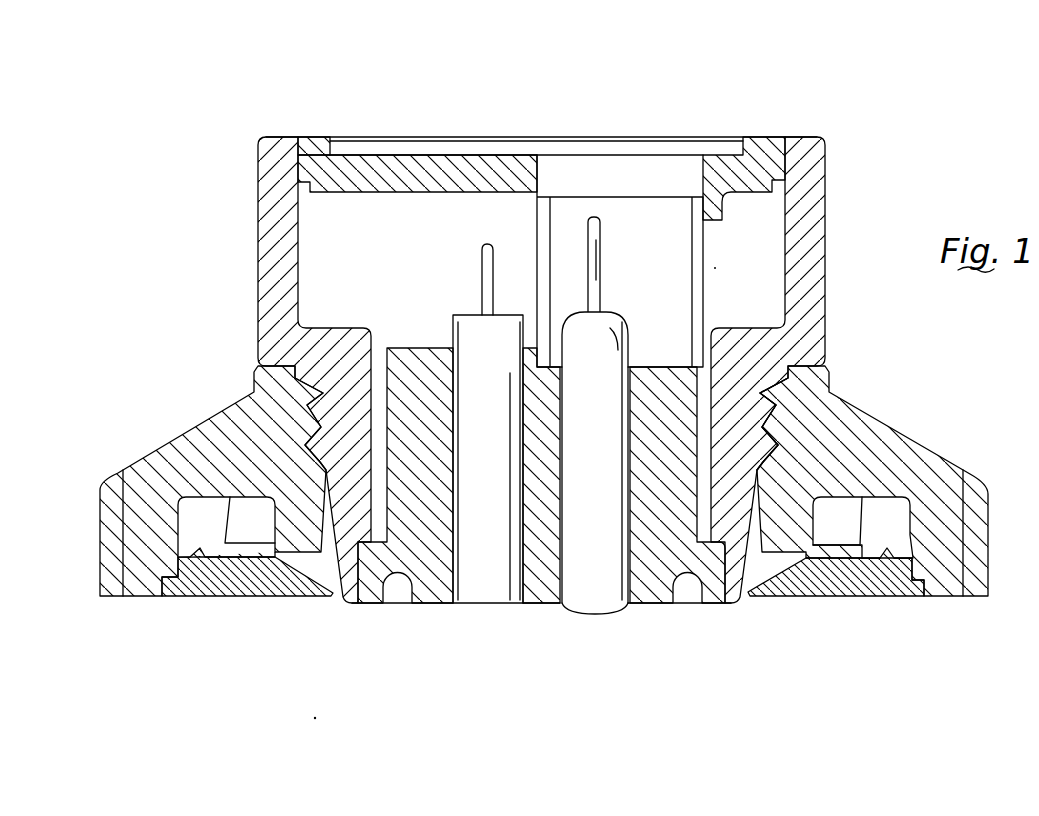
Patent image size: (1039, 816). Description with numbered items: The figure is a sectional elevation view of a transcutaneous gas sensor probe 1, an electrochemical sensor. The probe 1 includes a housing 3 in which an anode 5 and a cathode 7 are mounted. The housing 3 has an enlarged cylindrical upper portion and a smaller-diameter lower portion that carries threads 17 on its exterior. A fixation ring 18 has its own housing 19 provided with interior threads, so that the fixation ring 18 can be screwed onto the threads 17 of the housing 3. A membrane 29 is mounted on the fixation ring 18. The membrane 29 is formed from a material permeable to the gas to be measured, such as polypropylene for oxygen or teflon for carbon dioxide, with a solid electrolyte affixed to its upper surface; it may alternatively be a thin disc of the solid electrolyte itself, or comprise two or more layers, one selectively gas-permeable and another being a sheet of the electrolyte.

The transcutaneous gas sensor probe 1 is at (548, 114).
The housing 3 is at (818, 228).
The anode 5 is at (443, 585).
The cathode 7 is at (480, 592).
The threads 17 is at (778, 404).
The fixation ring 18 is at (953, 468).
The housing 19 is at (883, 420).
The membrane 29 is at (500, 605).